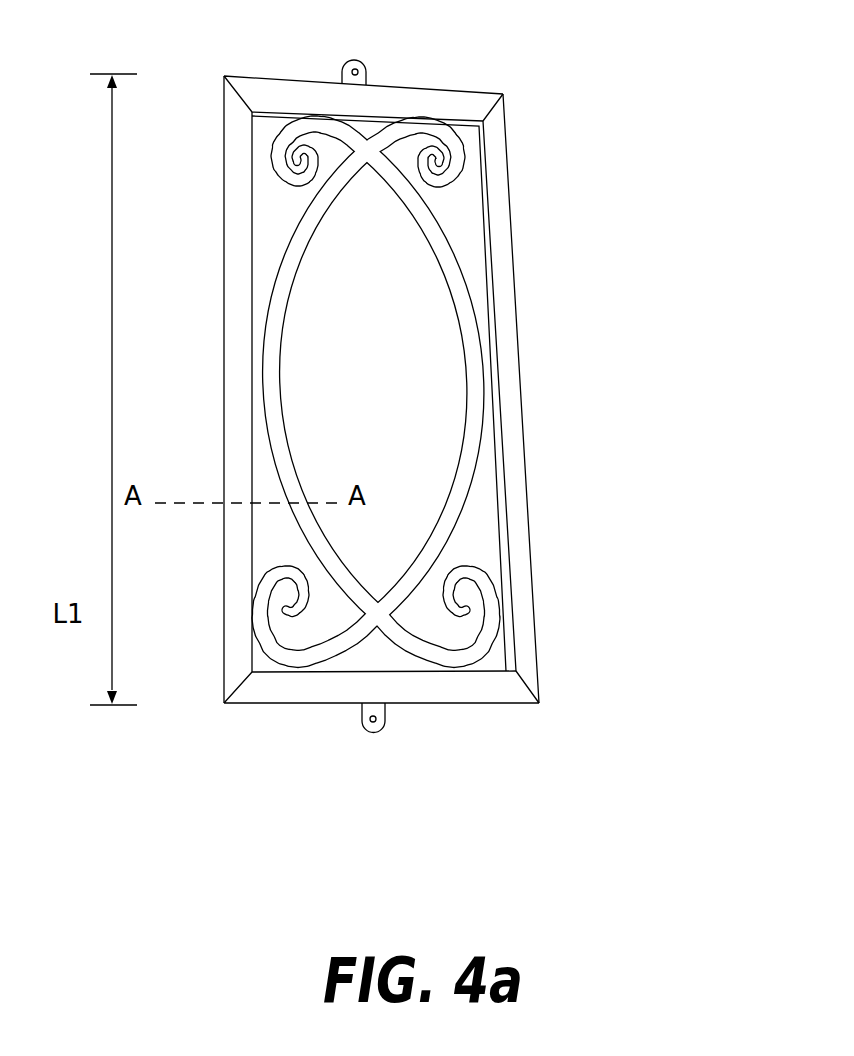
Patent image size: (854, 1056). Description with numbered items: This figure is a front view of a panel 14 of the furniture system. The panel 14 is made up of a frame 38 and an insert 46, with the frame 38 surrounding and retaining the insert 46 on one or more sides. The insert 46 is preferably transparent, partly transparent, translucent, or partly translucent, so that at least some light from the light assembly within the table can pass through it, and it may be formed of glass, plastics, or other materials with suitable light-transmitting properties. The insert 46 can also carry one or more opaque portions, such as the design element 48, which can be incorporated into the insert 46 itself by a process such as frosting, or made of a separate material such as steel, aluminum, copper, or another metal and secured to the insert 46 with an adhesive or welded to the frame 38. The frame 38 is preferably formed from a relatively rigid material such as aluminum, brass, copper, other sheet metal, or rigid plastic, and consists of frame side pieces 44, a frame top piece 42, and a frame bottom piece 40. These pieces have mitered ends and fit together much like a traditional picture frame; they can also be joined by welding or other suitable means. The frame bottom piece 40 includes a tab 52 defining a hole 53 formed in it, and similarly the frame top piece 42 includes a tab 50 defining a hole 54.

The panel 14 is at (404, 405).
The frame 38 is at (367, 402).
The frame bottom piece 40 is at (482, 693).
The frame top piece 42 is at (463, 107).
The frame side pieces 44 is at (233, 375).
The insert 46 is at (470, 223).
The design element 48 is at (460, 293).
The tab 50 is at (358, 44).
The tab 52 is at (377, 754).
The hole 53 is at (371, 720).
The hole 54 is at (367, 63).